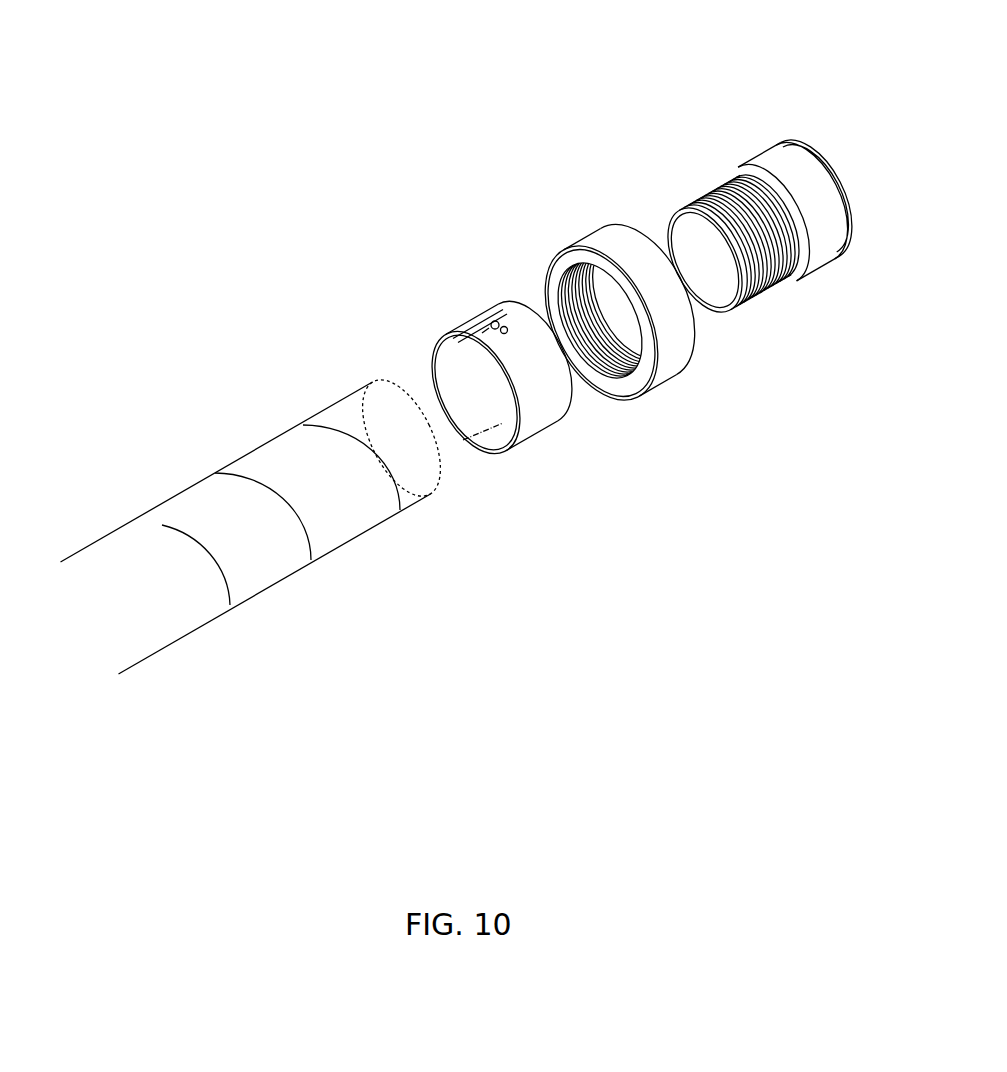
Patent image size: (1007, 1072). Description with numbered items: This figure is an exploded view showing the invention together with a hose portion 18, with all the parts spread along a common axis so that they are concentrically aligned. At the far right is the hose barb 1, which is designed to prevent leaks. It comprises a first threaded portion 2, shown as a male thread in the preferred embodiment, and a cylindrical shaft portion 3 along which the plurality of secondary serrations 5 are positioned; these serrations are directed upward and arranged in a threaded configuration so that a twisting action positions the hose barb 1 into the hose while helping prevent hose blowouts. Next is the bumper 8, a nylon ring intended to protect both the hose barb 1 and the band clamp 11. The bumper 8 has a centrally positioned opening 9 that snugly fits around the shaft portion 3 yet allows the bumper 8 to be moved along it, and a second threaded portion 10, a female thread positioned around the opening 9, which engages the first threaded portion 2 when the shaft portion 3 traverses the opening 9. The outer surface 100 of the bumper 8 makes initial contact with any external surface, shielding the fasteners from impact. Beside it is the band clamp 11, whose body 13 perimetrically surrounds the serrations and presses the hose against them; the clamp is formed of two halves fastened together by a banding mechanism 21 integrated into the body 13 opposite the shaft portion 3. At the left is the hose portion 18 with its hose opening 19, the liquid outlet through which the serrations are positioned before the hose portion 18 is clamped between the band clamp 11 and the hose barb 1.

The hose barb 1 is at (768, 115).
The first threaded portion 2 is at (796, 278).
The shaft portion 3 is at (750, 170).
The plurality of secondary serrations 5 is at (703, 193).
The bumper 8 is at (624, 286).
The opening 9 is at (578, 291).
The second threaded portion 10 is at (608, 382).
The outer surface 100 is at (667, 368).
The band clamp 11 is at (506, 382).
The body 13 is at (545, 417).
The banding mechanism 21 is at (498, 337).
The hose portion 18 is at (259, 506).
The hose opening 19 is at (402, 417).